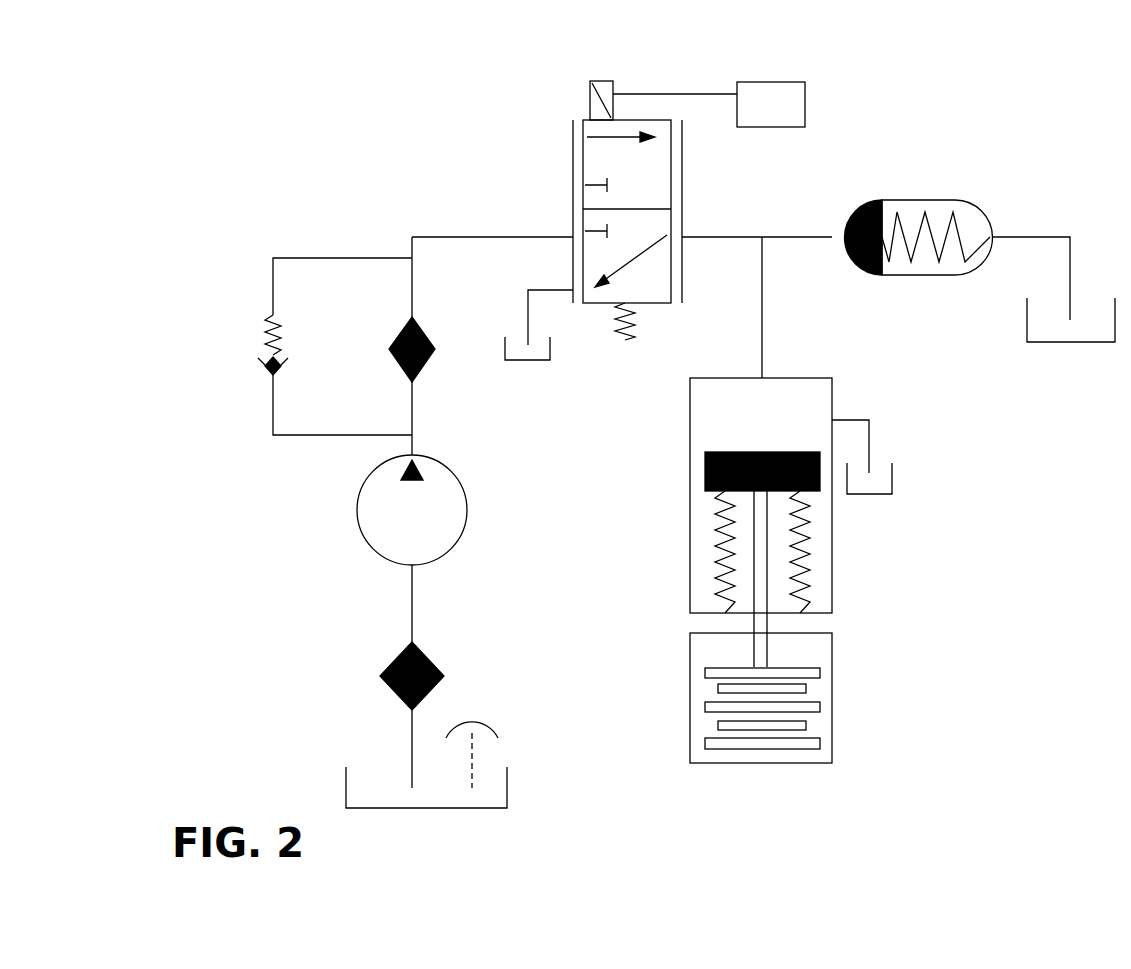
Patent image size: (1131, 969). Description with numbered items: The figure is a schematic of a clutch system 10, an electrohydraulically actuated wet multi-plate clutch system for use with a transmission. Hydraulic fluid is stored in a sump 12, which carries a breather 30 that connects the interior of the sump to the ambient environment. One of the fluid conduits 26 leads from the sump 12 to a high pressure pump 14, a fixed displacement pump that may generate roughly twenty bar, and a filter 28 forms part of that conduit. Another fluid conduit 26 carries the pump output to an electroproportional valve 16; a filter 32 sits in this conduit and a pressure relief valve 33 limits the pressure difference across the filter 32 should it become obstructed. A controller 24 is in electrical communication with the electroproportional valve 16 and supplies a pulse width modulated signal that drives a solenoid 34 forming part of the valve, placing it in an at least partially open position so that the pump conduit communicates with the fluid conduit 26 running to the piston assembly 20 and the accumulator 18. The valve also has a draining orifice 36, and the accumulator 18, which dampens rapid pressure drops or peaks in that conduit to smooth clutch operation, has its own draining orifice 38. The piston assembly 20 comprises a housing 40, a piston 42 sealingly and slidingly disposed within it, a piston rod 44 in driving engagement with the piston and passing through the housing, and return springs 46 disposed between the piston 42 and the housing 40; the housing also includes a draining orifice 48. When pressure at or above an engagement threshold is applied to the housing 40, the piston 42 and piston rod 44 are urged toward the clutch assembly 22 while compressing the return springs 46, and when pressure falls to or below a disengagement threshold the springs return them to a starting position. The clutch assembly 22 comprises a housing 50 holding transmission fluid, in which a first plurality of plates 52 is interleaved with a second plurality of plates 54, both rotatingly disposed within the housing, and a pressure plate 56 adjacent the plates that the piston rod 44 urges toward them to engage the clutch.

The clutch system 10 is at (908, 76).
The sump 12 is at (526, 788).
The high pressure pump 14 is at (357, 505).
The electroproportional valve 16 is at (560, 145).
The accumulator 18 is at (912, 200).
The piston assembly 20 is at (818, 365).
The clutch assembly 22 is at (849, 650).
The controller 24 is at (772, 82).
The fluid conduits 26 is at (482, 237).
The filter 28 is at (385, 665).
The breather 30 is at (472, 722).
The filter 32 is at (400, 340).
The pressure relief valve 33 is at (280, 329).
The solenoid 34 is at (590, 88).
The draining orifice 36 is at (545, 290).
The draining orifice 38 is at (1037, 237).
The housing 40 is at (832, 530).
The piston 42 is at (705, 472).
The piston rod 44 is at (757, 527).
The return spring 46 is at (718, 585).
The draining orifice 48 is at (850, 420).
The housing 50 is at (832, 742).
The first plurality of plates 52 is at (806, 727).
The second plurality of plates 54 is at (705, 744).
The pressure plate 56 is at (705, 672).